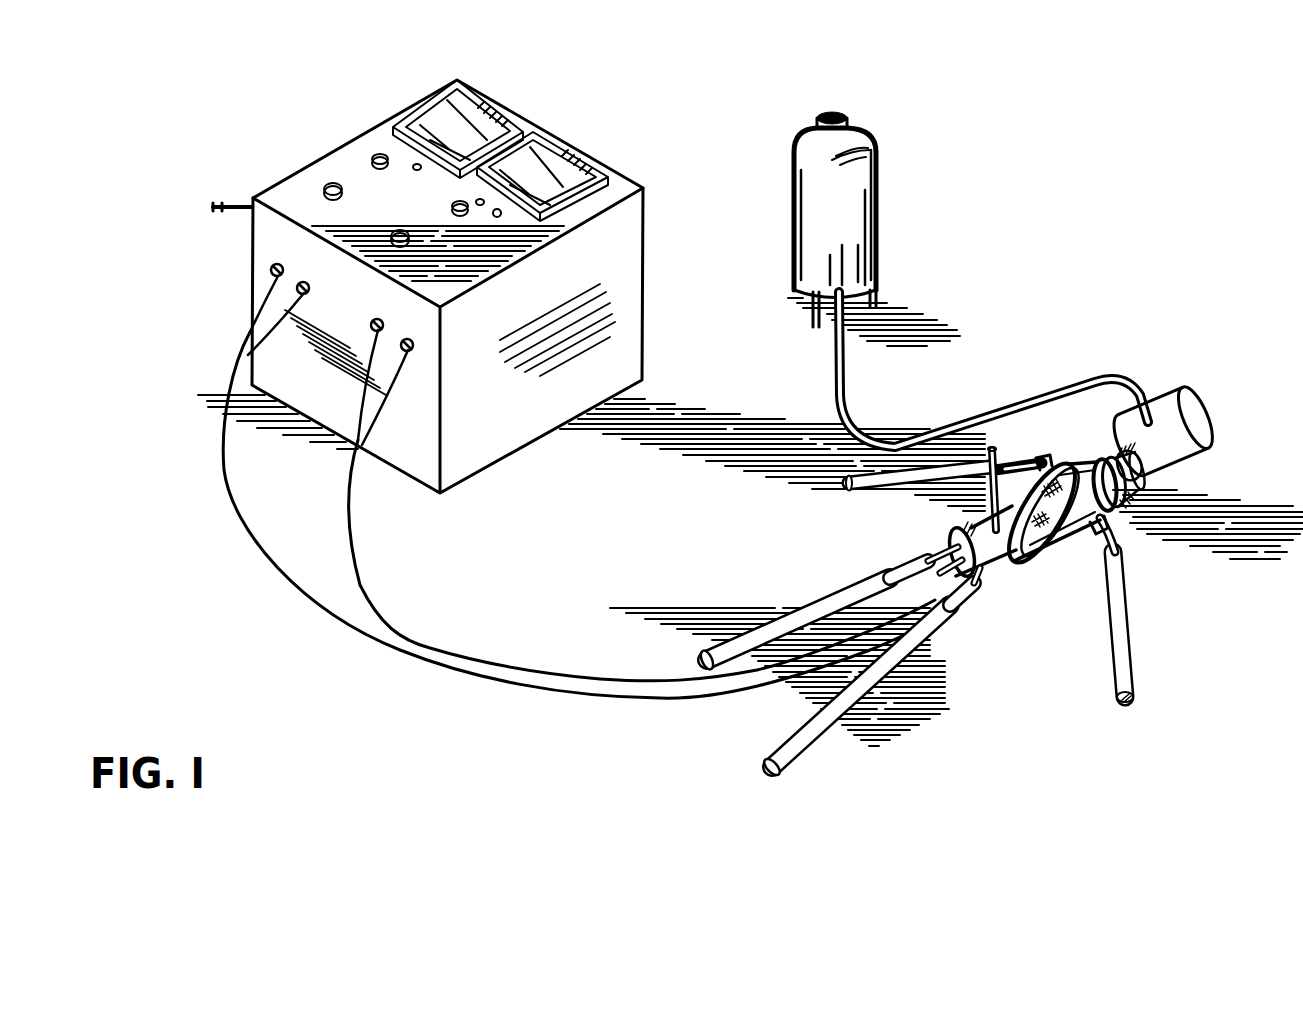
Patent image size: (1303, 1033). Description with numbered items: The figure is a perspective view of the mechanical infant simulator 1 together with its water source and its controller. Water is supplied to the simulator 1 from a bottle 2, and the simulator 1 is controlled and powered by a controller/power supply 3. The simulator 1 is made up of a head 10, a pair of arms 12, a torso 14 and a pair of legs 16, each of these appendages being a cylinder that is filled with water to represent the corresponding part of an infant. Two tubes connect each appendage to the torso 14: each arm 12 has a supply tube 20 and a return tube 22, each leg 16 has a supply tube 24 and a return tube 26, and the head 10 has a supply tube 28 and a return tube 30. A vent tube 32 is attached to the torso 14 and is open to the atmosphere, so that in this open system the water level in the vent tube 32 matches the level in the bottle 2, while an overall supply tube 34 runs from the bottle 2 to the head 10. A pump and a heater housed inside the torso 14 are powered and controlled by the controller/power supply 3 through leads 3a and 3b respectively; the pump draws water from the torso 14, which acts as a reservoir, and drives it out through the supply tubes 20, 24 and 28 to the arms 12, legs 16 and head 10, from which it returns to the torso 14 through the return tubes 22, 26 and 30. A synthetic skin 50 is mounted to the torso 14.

The mechanical infant simulator 1 is at (1000, 668).
The bottle 2 is at (910, 178).
The controller/power supply 3 is at (322, 118).
The lead 3a is at (238, 485).
The lead 3b is at (360, 548).
The head 10 is at (1195, 402).
The arm 12 is at (873, 502).
The torso 14 is at (958, 530).
The leg 16 is at (835, 600).
The supply tube 20 is at (1046, 466).
The return tube 22 is at (1038, 452).
The supply tube 24 is at (940, 555).
The return tube 26 is at (885, 582).
The supply tube 28 is at (1112, 450).
The return tube 30 is at (1150, 480).
The vent tube 32 is at (990, 445).
The overall supply tube 34 is at (1113, 380).
The synthetic skin 50 is at (1050, 560).